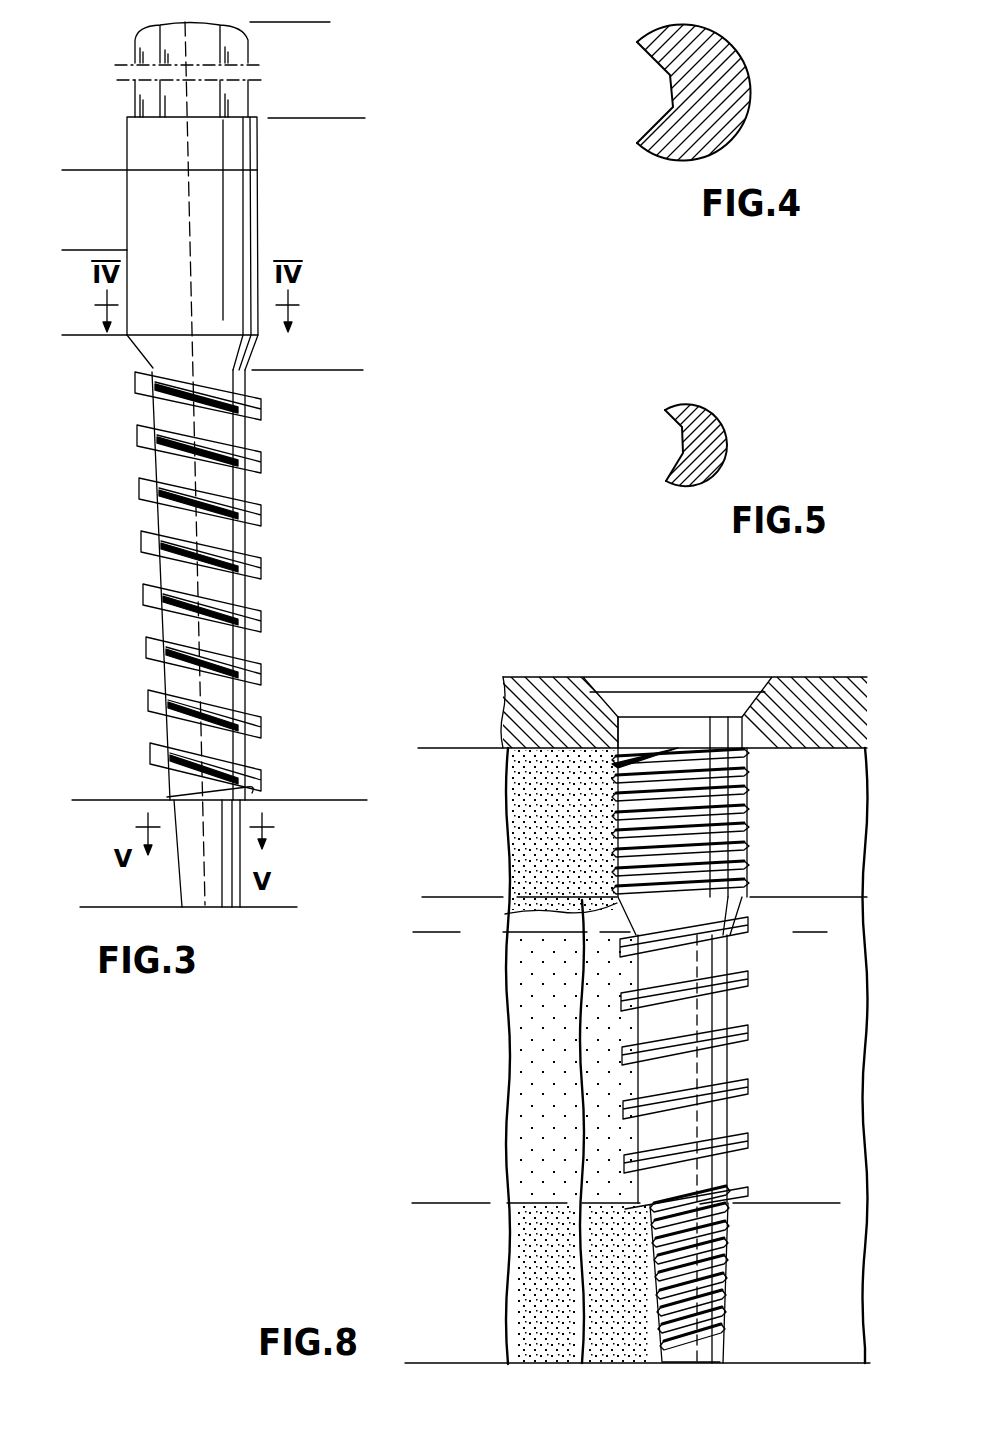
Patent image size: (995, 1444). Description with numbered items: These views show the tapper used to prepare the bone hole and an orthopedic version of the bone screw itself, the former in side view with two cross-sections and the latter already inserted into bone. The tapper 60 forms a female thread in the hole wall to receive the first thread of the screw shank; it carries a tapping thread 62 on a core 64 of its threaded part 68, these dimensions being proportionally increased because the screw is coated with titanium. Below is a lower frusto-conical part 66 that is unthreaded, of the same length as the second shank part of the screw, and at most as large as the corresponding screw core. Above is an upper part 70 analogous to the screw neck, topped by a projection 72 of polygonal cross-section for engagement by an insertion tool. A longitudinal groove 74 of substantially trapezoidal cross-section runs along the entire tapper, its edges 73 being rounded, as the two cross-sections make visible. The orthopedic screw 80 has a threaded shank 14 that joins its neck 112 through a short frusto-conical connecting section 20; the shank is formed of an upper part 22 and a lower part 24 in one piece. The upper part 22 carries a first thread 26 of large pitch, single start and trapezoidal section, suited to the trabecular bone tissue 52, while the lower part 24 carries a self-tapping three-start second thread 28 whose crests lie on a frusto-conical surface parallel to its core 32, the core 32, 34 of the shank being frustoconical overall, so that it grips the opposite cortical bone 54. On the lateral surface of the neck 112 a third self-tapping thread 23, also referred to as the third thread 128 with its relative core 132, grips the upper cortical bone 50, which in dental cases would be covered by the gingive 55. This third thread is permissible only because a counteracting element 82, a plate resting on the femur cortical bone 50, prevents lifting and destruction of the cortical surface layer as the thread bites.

In FIG. 8, the threaded shank 14 is at (576, 1131).
In FIG. 8, the frusto-conical connecting section 20 is at (482, 936).
In FIG. 8, the upper part of the shank 22 is at (813, 1203).
In FIG. 8, the third self-tapping thread 23 is at (773, 893).
In FIG. 8, the lower part of the shank 24 is at (813, 1203).
In FIG. 8, the first thread 26 is at (747, 1080).
In FIG. 8, the second thread 28 is at (722, 1263).
In FIG. 8, the core of the second thread 32 is at (724, 1238).
In FIG. 8, the core 34 is at (733, 1058).
In FIG. 3, the cortical bone 50 is at (67, 250).
In FIG. 8, the cortical bone 50 is at (428, 748).
In FIG. 3, the trabecular bone tissue 52 is at (75, 800).
In FIG. 8, the trabecular bone tissue 52 is at (428, 932).
In FIG. 3, the opposite cortical bone 54 is at (88, 800).
In FIG. 8, the opposite cortical bone 54 is at (428, 1203).
In FIG. 3, the gingive 55 is at (67, 170).
In FIG. 3, the tapper 60 is at (270, 550).
In FIG. 3, the tapping thread 62 is at (258, 464).
In FIG. 3, the core of the tapper 64 is at (160, 568).
In FIG. 3, the lower frusto-conical part of the tapper 66 is at (290, 800).
In FIG. 3, the threaded part of the tapper 68 is at (325, 800).
In FIG. 3, the upper part of the tapper 70 is at (318, 118).
In FIG. 3, the projection 72 is at (315, 22).
In FIG. 4, the edges of the groove 73 is at (650, 128).
In FIG. 5, the edges of the groove 73 is at (667, 412).
In FIG. 3, the longitudinal groove 74 is at (225, 793).
In FIG. 4, the longitudinal groove 74 is at (655, 118).
In FIG. 5, the longitudinal groove 74 is at (683, 448).
In FIG. 8, the screw 80 is at (738, 1010).
In FIG. 8, the counteracting element 82 is at (814, 708).
In FIG. 8, the screw neck 112 is at (705, 923).
In FIG. 8, the third thread 128 is at (617, 817).
In FIG. 8, the core of the third thread 132 is at (615, 845).